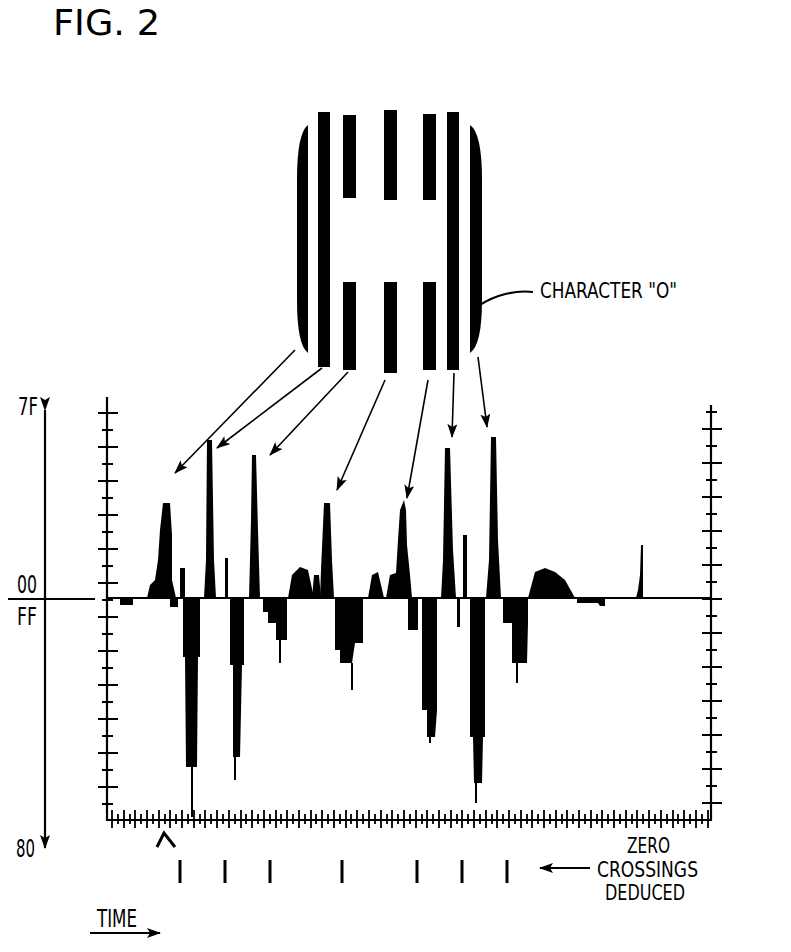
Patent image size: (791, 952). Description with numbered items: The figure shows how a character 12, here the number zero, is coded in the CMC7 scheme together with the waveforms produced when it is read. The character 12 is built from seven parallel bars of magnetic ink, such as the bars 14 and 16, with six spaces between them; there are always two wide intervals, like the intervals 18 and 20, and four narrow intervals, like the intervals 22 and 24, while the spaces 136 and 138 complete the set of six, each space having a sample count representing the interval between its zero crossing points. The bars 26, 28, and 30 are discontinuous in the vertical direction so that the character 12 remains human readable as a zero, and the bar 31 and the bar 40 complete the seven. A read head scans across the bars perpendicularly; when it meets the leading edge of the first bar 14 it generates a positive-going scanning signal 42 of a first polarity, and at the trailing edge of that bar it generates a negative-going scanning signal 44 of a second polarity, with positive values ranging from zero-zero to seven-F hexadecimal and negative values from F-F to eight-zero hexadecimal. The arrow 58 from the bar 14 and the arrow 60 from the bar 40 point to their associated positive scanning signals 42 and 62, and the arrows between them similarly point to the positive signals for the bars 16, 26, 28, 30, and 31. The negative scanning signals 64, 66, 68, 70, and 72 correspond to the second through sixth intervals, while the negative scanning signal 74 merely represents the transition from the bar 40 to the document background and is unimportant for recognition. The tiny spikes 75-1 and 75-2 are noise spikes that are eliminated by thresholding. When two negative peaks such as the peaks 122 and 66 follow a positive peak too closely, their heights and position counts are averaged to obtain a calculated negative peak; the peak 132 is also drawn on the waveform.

The character 12 is at (263, 207).
The bar 14 is at (297, 138).
The bar 16 is at (325, 112).
The wide interval 18 is at (365, 157).
The wide interval 20 is at (413, 170).
The narrow interval 22 is at (312, 125).
The narrow interval 24 is at (462, 125).
The bar 26 is at (347, 200).
The bar 28 is at (393, 110).
The bar 30 is at (432, 200).
The bar 31 is at (458, 110).
The bar 40 is at (482, 148).
The scanning signal of a first polarity 42 is at (165, 508).
The scanning signal of a second polarity 44 is at (190, 788).
The arrow 58 is at (262, 370).
The arrow 60 is at (483, 390).
The scanning signal of the first polarity 62 is at (497, 487).
The scanning signal of the second polarity 64 is at (235, 760).
The scanning signal of the second polarity 66 is at (280, 663).
The scanning signal of the second polarity 68 is at (352, 690).
The scanning signal of the second polarity 70 is at (428, 738).
The scanning signal of the second polarity 72 is at (475, 797).
The scanning signal of the second polarity 74 is at (517, 680).
The noise spike 75-1 is at (182, 572).
The noise spike 75-2 is at (227, 570).
The negative peak 122 is at (267, 633).
The positive peak 132 is at (210, 440).
The space 136 is at (334, 117).
The space 138 is at (440, 117).